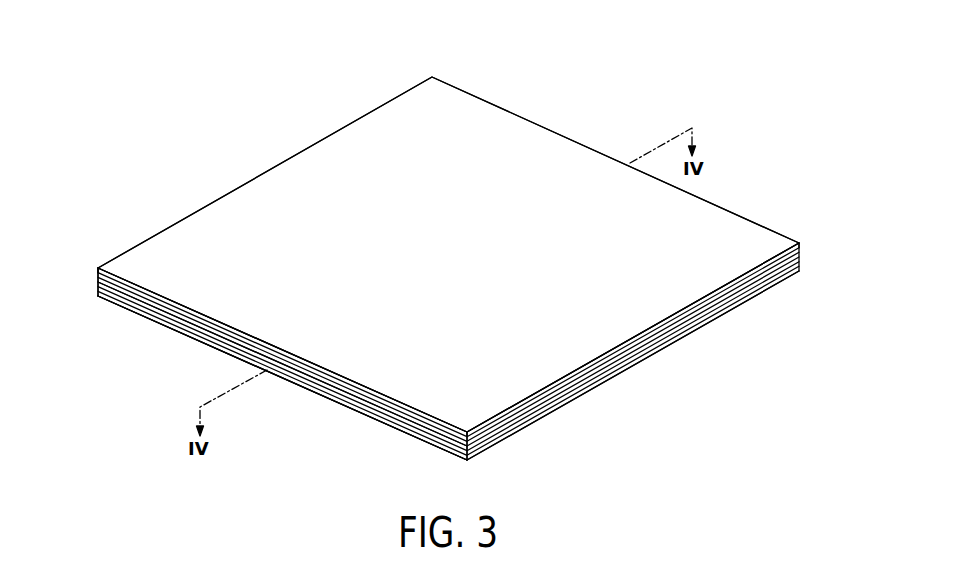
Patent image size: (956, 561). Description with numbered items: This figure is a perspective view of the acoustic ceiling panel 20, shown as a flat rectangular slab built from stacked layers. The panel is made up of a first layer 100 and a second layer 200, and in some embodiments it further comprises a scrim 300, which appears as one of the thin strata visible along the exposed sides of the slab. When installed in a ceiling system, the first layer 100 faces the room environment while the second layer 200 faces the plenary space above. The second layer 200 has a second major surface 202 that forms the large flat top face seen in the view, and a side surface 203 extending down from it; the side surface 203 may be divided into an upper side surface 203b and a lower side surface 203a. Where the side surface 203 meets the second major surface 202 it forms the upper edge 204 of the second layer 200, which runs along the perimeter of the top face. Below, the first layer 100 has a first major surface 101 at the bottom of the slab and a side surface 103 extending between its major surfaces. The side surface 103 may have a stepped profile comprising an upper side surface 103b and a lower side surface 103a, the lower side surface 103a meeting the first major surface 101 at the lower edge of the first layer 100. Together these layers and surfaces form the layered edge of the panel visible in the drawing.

The acoustic ceiling panel 20 is at (575, 62).
The first layer 100 is at (700, 331).
The first major surface 101 is at (412, 432).
The side surface 103 is at (266, 371).
The lower side surface 103a is at (218, 342).
The upper side surface 103b is at (123, 290).
The second layer 200 is at (764, 242).
The second major surface 202 is at (562, 165).
The side surface 203 is at (116, 235).
The lower side surface 203a is at (100, 275).
The upper side surface 203b is at (99, 266).
The upper edge 204 is at (137, 286).
The scrim 300 is at (346, 416).